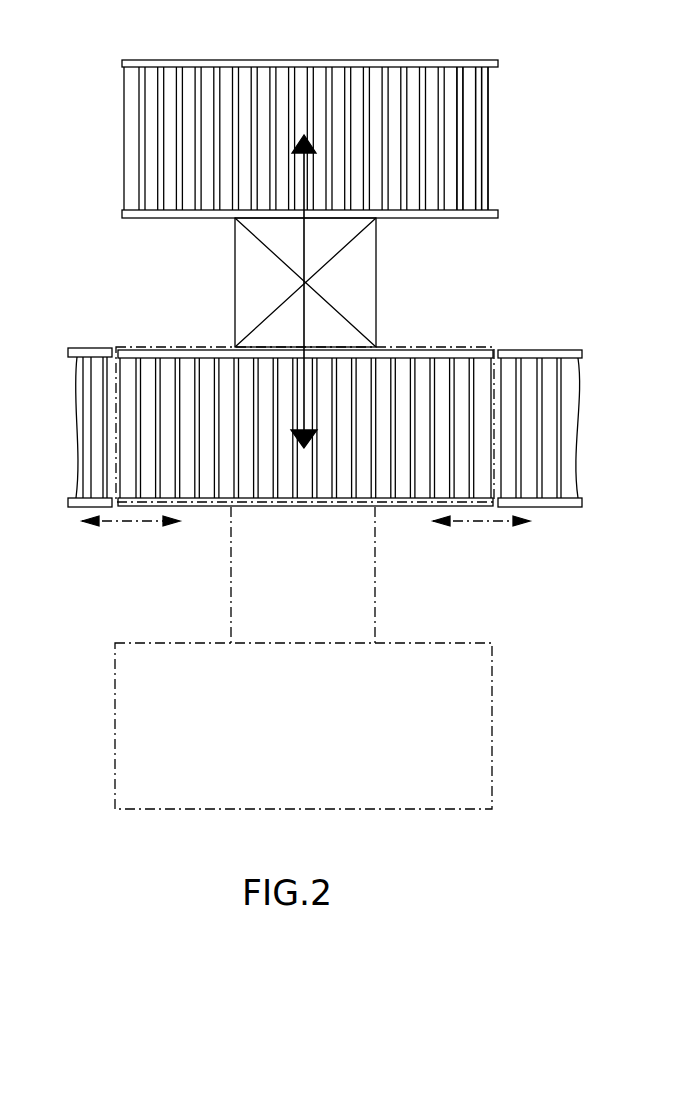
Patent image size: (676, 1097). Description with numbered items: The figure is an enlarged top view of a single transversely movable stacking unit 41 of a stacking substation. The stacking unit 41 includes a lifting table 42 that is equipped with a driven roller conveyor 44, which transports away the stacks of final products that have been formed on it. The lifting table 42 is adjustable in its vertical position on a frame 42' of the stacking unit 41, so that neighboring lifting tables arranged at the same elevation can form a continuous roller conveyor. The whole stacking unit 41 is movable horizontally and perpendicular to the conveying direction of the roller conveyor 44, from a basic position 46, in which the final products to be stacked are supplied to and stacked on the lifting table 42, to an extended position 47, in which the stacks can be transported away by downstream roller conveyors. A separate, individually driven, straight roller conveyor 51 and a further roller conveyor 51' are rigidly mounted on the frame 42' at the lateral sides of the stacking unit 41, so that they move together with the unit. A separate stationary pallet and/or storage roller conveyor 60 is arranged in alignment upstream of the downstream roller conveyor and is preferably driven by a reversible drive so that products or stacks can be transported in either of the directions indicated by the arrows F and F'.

The stacking unit 41 is at (385, 92).
The lifting table 42 is at (334, 226).
The frame 42' is at (349, 282).
The driven roller conveyor 44 is at (482, 160).
The basic position 46 is at (502, 92).
The extended position 47 is at (137, 345).
The movable roller conveyor 51 is at (285, 553).
The movable roller conveyor 51' is at (545, 451).
The stationary pallet and/or storage roller conveyor 60 is at (97, 380).
The direction arrow F is at (481, 551).
The direction arrow F' is at (127, 553).